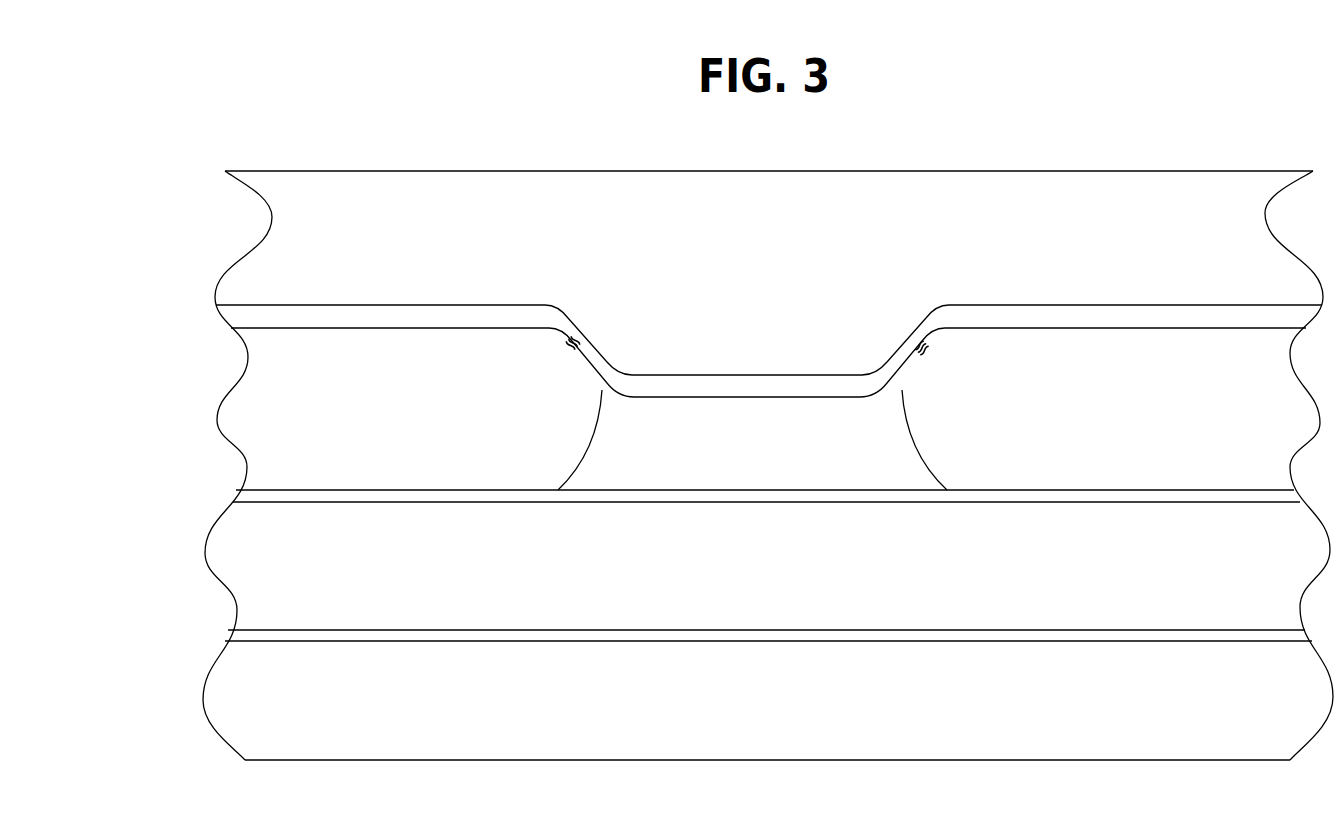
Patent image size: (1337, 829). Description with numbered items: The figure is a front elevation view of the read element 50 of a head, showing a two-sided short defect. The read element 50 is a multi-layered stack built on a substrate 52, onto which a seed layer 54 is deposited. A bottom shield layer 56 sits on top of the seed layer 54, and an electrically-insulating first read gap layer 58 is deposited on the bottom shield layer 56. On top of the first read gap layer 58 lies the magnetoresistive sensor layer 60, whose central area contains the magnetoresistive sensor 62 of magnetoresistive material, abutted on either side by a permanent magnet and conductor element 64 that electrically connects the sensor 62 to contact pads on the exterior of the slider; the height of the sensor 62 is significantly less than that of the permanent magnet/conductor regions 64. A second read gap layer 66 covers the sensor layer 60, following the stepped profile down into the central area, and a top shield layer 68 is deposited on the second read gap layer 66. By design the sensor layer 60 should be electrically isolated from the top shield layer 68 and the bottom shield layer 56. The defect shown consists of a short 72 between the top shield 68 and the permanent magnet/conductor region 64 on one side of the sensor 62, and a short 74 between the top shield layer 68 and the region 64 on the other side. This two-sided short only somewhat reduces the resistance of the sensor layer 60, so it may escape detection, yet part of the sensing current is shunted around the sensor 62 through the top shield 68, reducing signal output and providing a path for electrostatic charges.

The read element 50 is at (1104, 133).
The substrate 52 is at (779, 712).
The seed layer 54 is at (250, 634).
The bottom shield layer 56 is at (779, 582).
The first read gap layer 58 is at (250, 494).
The magnetoresistive sensor layer 60 is at (624, 430).
The magnetoresistive sensor 62 is at (776, 458).
The permanent magnet and conductor element 64 is at (426, 414).
The second read gap layer 66 is at (247, 318).
The top shield layer 68 is at (789, 260).
The short 72 is at (592, 328).
The short 74 is at (902, 331).